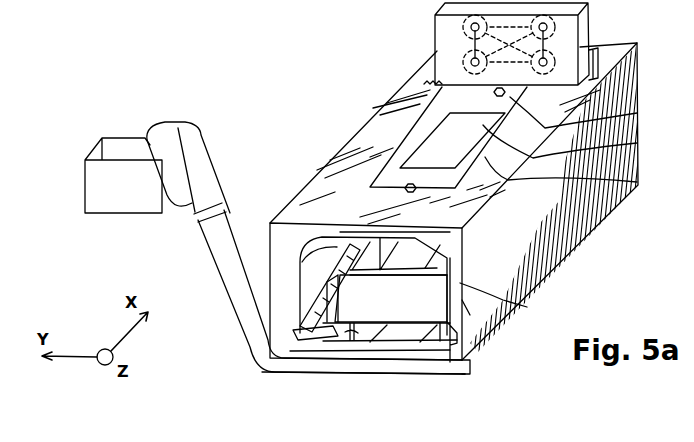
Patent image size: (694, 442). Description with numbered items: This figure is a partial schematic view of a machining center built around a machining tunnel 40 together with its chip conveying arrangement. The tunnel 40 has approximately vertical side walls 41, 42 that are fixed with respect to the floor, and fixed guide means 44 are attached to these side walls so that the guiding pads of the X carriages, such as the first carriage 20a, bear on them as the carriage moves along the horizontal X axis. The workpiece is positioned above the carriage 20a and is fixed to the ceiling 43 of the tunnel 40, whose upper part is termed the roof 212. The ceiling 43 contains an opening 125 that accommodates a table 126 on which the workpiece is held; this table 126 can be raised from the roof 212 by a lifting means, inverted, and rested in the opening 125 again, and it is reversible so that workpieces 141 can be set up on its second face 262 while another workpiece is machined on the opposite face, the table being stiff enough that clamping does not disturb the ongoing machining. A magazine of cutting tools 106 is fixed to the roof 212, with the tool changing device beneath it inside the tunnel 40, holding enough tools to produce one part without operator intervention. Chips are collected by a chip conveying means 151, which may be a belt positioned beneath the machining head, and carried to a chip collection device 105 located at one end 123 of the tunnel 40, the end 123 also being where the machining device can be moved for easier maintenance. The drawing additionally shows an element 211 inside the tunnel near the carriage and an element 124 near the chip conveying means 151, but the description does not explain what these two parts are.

The machining tunnel 40 is at (563, 249).
The first carriage 20a is at (527, 307).
The side wall 41 is at (262, 340).
The side wall 42 is at (470, 315).
The ceiling 43 is at (362, 232).
The fixed guide means 44 is at (234, 346).
The chip collection device 105 is at (115, 180).
The magazine of cutting tools 106 is at (447, 33).
The end of the tunnel 123 is at (465, 355).
The support foot 124 is at (395, 345).
The opening 125 is at (437, 84).
The table 126 is at (637, 113).
The workpieces 141 is at (637, 143).
The chip conveying means 151 is at (352, 335).
The guide plate 211 is at (300, 263).
The roof 212 is at (362, 150).
The second face 262 is at (637, 183).